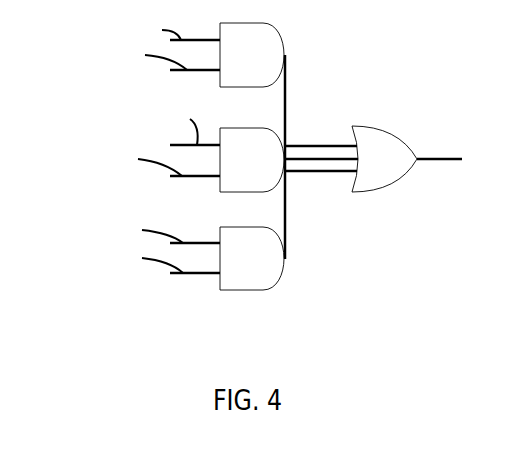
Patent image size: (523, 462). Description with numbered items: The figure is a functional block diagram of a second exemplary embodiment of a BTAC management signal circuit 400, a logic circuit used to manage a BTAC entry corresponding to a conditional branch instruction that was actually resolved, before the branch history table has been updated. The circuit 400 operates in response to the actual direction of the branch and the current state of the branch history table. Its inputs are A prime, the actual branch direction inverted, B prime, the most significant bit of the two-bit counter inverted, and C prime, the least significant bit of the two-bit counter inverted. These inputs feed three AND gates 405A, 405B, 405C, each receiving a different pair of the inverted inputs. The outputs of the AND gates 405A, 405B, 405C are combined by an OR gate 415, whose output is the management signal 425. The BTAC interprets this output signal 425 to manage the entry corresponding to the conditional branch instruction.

The BTAC management signal circuit 400 is at (76, 86).
The AND gate 405A is at (252, 55).
The AND gate 405B is at (252, 160).
The AND gate 405C is at (252, 258).
The OR gate 415 is at (384, 159).
The management signal 425 is at (460, 158).